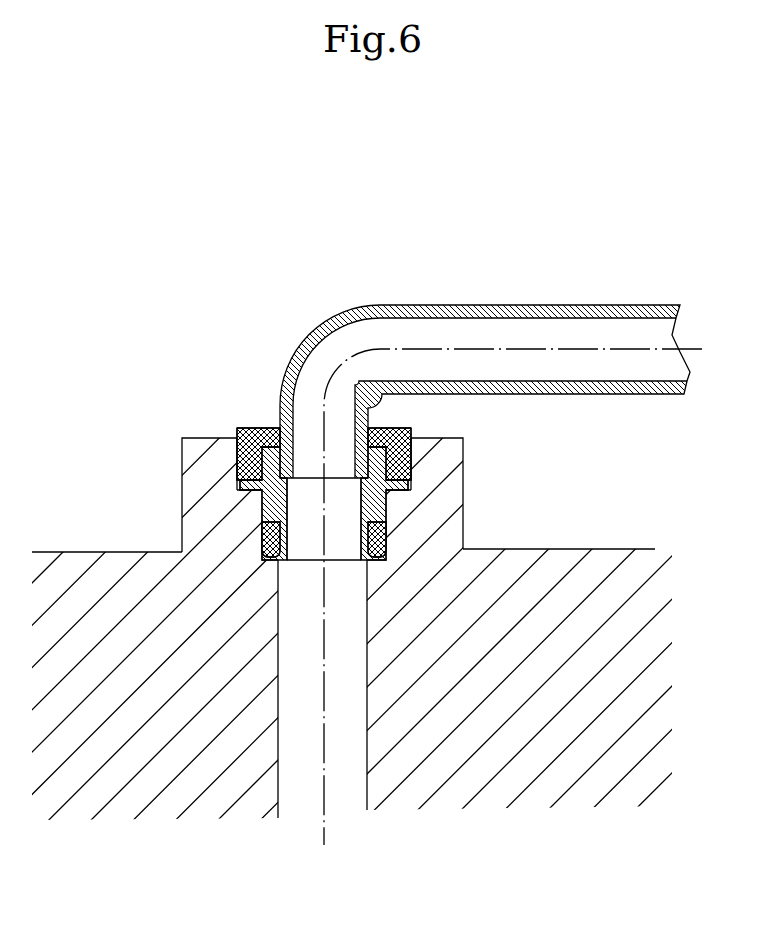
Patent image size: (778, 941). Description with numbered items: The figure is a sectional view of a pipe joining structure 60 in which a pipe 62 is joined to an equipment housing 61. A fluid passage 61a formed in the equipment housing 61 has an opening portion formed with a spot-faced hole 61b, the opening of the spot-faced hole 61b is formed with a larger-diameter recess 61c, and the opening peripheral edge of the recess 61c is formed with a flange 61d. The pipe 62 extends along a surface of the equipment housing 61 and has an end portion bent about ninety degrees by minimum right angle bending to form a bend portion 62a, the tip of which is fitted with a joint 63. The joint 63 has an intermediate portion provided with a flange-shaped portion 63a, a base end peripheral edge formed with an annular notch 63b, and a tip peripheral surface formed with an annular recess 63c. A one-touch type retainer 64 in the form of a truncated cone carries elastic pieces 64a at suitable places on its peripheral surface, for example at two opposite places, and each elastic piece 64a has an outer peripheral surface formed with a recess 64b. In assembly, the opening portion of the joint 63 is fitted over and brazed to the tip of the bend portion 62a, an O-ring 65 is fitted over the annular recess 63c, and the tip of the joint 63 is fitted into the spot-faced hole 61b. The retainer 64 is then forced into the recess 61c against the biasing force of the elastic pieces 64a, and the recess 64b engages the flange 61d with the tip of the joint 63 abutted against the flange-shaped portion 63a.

The pipe joining structure 60 is at (208, 353).
The equipment housing 61 is at (592, 547).
The fluid passage 61a is at (367, 745).
The spot-faced hole 61b is at (283, 542).
The recess 61c is at (458, 446).
The flange 61d is at (408, 440).
The pipe 62 is at (571, 303).
The bend portion 62a is at (281, 394).
The joint 63 is at (262, 506).
The flange-shaped portion 63a is at (408, 470).
The annular notch 63b is at (238, 476).
The annular recess 63c is at (386, 538).
The one-touch type retainer 64 is at (244, 425).
The elastic pieces 64a is at (328, 441).
The recess 64b is at (232, 432).
The O-ring 65 is at (262, 538).